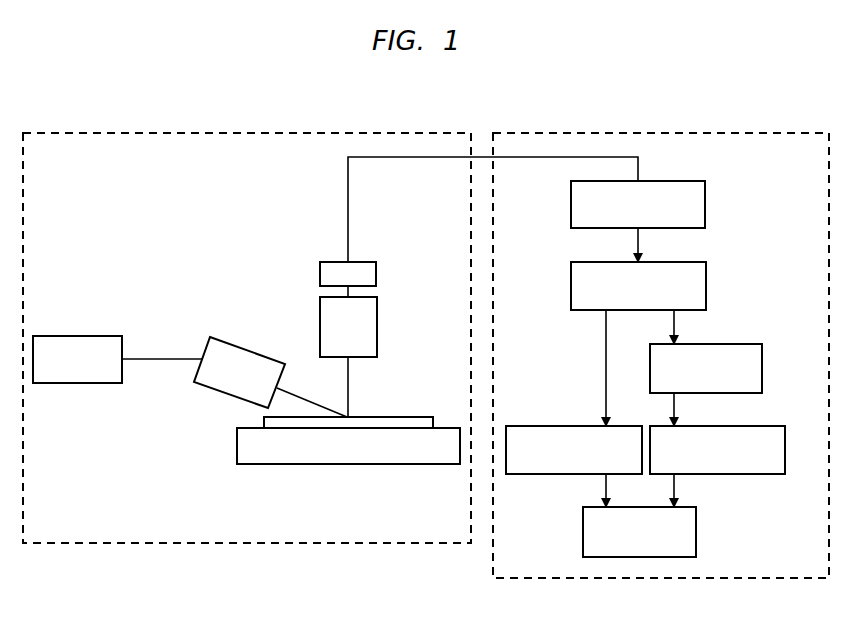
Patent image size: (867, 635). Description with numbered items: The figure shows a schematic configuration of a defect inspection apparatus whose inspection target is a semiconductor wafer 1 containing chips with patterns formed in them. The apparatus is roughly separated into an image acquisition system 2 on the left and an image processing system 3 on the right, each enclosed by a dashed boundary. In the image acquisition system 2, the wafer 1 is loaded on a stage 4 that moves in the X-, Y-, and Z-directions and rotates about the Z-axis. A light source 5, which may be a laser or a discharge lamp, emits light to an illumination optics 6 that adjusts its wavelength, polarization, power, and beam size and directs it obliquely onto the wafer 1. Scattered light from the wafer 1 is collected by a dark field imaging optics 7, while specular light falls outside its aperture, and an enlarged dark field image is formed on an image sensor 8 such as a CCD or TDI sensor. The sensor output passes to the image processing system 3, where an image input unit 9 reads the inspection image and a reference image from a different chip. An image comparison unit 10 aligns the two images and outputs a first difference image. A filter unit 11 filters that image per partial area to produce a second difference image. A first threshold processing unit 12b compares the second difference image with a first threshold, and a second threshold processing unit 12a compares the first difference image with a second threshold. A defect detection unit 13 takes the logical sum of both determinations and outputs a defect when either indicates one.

The wafer 1 is at (387, 415).
The image acquisition system 2 is at (230, 543).
The image processing system 3 is at (653, 578).
The stage 4 is at (237, 447).
The light source 5 is at (73, 383).
The illumination optics 6 is at (202, 385).
The imaging optics 7 is at (377, 327).
The image sensor 8 is at (376, 277).
The image input unit 9 is at (705, 210).
The image comparison unit 10 is at (706, 293).
The filter unit 11 is at (747, 344).
The second threshold processing unit 12a is at (578, 426).
The first threshold processing unit 12b is at (747, 426).
The defect detection unit 13 is at (696, 537).